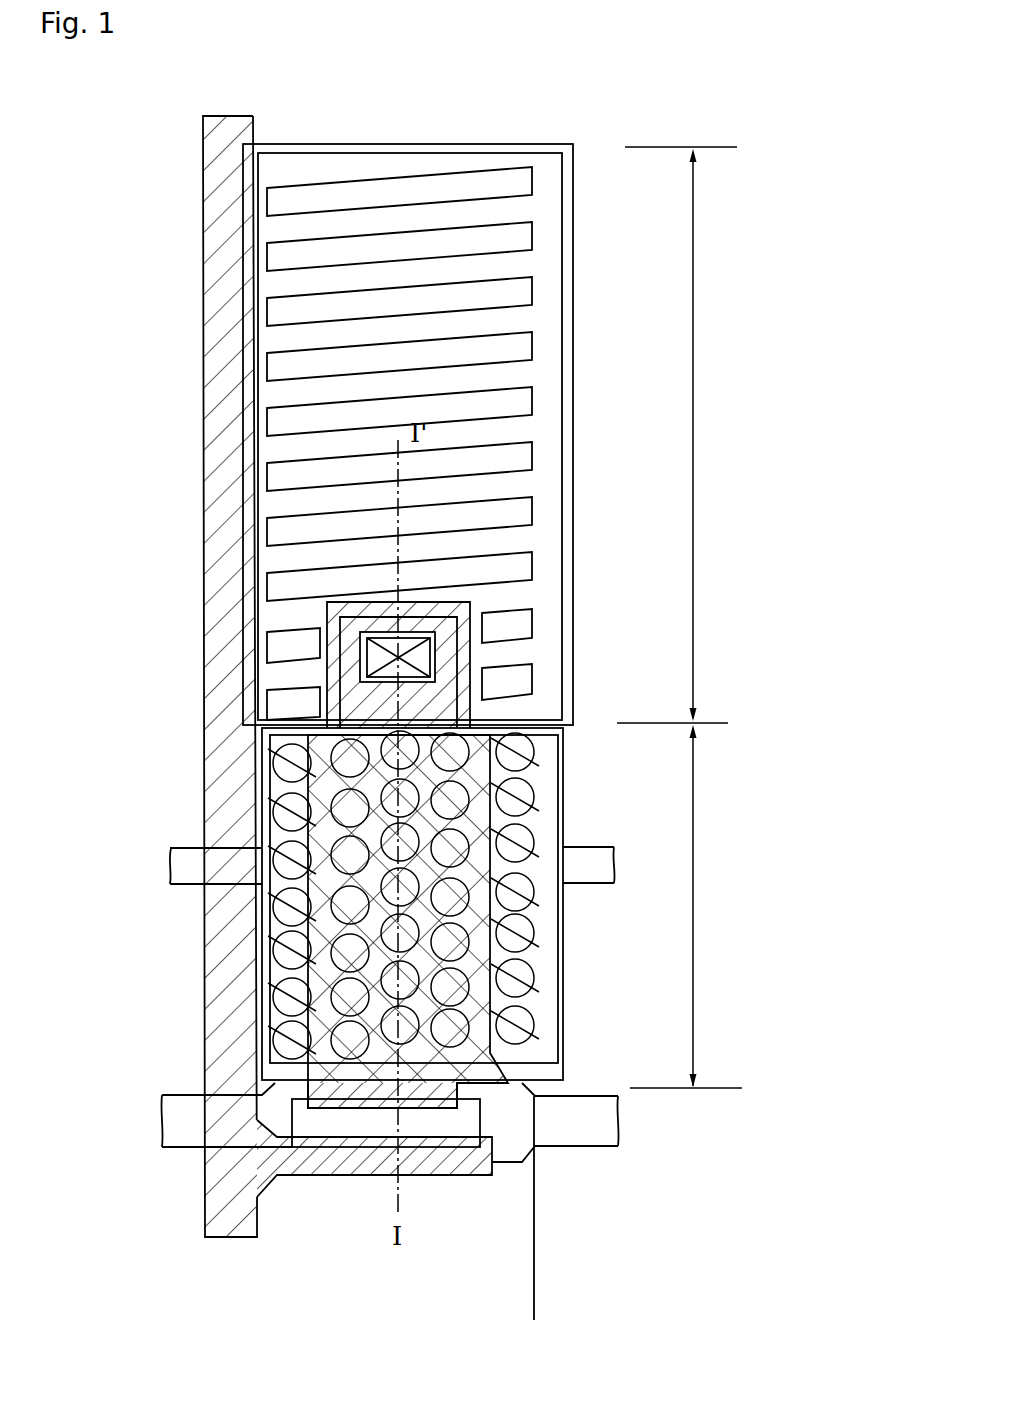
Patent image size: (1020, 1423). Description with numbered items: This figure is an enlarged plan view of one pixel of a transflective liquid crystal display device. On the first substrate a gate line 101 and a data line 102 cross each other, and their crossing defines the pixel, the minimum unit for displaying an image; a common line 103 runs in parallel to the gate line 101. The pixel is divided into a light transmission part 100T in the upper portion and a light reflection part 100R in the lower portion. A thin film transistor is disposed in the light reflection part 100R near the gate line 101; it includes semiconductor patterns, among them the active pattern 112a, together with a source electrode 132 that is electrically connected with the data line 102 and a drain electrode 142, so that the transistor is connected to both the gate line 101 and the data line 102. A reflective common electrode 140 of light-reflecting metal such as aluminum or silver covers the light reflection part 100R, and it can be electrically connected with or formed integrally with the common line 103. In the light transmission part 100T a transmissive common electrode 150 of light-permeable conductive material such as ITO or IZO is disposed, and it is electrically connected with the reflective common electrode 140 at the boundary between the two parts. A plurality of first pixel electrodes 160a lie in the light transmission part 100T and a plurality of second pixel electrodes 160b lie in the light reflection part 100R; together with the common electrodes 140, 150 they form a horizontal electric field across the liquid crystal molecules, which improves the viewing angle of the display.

The light transmission part 100T is at (697, 435).
The light reflection part 100R is at (705, 906).
The gate line 101 is at (607, 1125).
The data line 102 is at (227, 1225).
The common line 103 is at (170, 857).
The active pattern 112a is at (380, 1137).
The source electrode 132 is at (327, 1170).
The reflective common electrode 140 is at (553, 998).
The drain electrode 142 is at (440, 1108).
The transmissive common electrode 150 is at (573, 285).
The first pixel electrodes 160a is at (508, 485).
The second pixel electrodes 160b is at (523, 770).